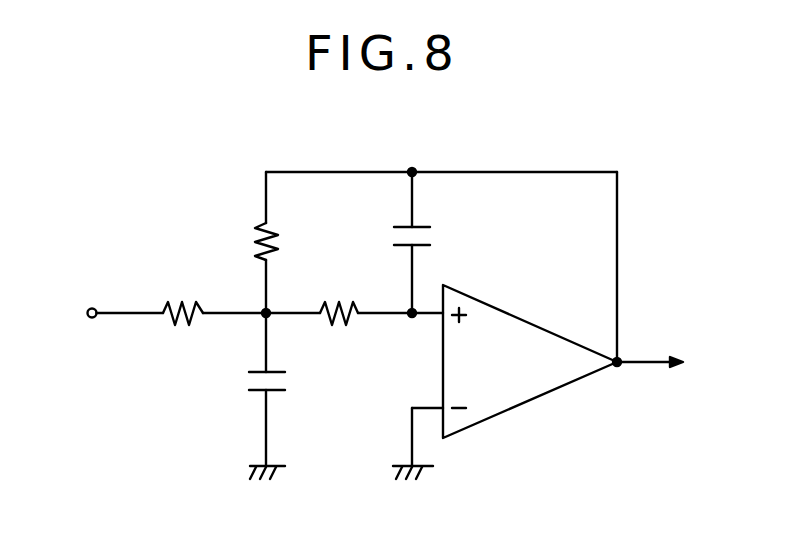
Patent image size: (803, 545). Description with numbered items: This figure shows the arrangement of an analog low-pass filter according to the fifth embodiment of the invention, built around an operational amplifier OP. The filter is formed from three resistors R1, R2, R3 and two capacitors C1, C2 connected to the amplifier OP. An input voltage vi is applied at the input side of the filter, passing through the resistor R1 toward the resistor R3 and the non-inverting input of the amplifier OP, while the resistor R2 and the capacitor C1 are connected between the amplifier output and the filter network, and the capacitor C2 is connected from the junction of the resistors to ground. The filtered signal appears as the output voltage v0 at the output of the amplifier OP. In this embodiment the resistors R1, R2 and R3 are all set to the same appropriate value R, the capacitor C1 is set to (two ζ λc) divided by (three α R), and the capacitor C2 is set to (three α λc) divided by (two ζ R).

The resistor R1 is at (212, 292).
The resistor R2 is at (287, 242).
The resistor R3 is at (339, 297).
The capacitor C1 is at (439, 242).
The capacitor C2 is at (238, 396).
The operational amplifier OP is at (500, 323).
The input voltage terminal vi is at (97, 313).
The output voltage terminal v0 is at (670, 373).